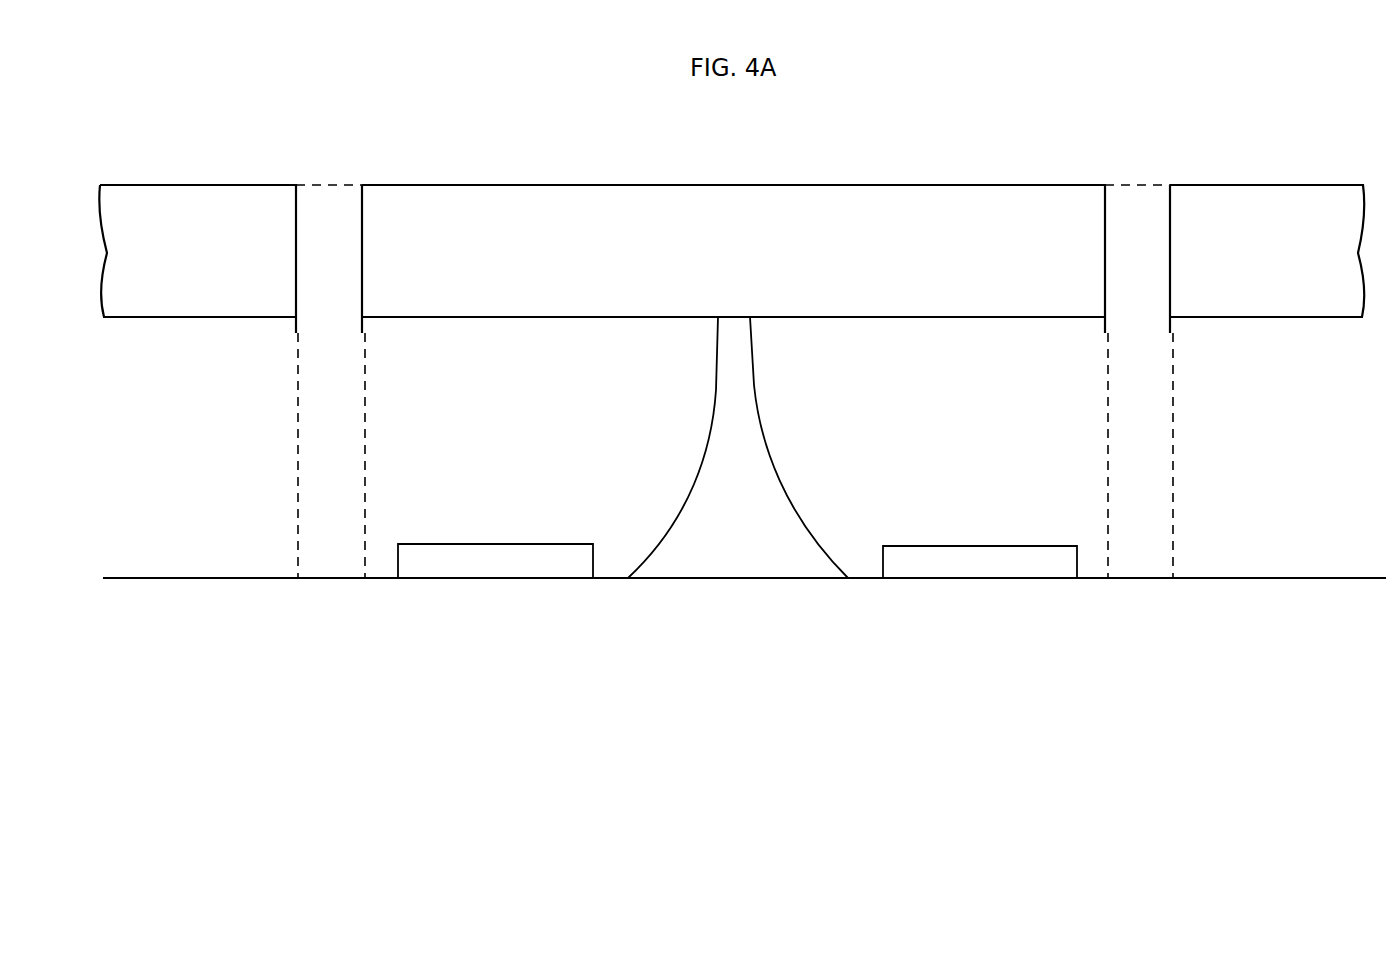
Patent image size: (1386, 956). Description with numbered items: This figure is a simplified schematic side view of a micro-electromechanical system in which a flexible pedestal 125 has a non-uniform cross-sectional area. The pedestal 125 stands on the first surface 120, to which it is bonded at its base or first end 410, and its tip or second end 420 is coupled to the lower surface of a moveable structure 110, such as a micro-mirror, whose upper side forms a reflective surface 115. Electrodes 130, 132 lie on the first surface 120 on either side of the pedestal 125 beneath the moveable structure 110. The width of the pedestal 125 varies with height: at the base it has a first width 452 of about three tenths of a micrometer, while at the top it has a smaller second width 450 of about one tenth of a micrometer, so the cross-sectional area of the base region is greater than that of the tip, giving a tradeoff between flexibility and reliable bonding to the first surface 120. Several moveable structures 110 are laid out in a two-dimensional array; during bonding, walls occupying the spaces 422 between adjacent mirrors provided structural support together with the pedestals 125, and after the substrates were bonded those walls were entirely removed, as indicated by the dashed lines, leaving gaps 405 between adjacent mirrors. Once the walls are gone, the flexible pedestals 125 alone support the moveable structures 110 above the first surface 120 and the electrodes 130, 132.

The moveable structure 110 is at (262, 231).
The reflective surface 115 is at (492, 185).
The first surface 120 is at (1253, 578).
The flexible pedestal 125 is at (740, 405).
The electrode 130 is at (503, 565).
The electrode 132 is at (987, 567).
The gap 405 is at (318, 463).
The base or first end of the pedestal 410 is at (737, 580).
The second end of the pedestal 420 is at (733, 315).
The space 422 is at (328, 233).
The second width 450 is at (678, 330).
The first width 452 is at (627, 580).